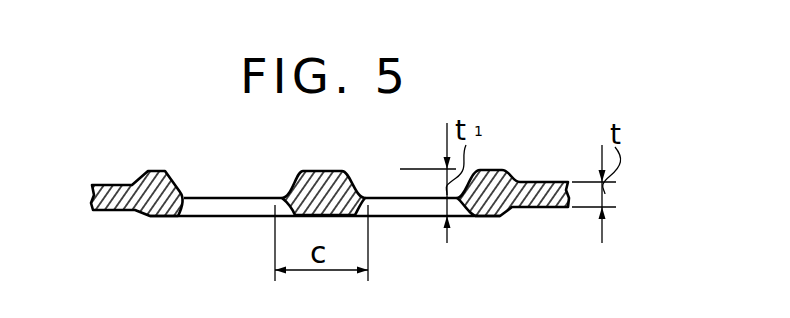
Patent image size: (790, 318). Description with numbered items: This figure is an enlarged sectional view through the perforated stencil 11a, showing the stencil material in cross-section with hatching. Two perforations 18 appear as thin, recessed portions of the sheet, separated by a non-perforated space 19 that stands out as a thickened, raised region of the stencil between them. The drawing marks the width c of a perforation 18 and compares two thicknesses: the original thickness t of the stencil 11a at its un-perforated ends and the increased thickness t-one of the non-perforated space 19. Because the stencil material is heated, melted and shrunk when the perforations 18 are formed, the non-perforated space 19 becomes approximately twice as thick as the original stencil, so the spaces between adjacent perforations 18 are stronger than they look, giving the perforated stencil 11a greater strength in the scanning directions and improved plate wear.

The perforated stencil 11a is at (541, 208).
The perforations 18 is at (226, 206).
The non-perforated space 19 is at (331, 168).